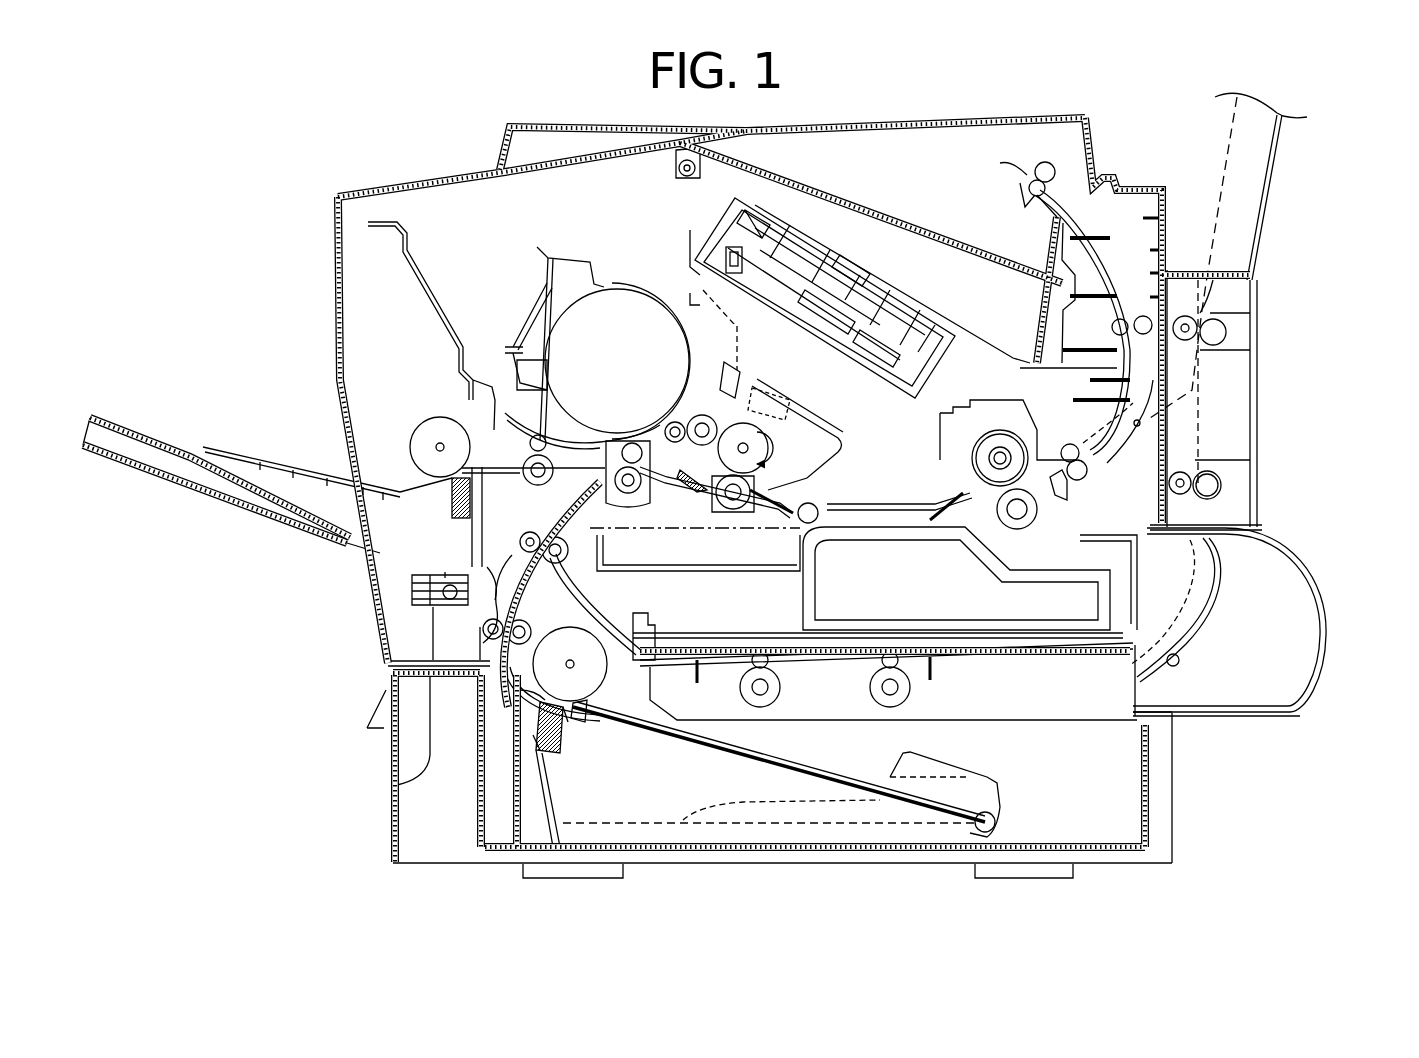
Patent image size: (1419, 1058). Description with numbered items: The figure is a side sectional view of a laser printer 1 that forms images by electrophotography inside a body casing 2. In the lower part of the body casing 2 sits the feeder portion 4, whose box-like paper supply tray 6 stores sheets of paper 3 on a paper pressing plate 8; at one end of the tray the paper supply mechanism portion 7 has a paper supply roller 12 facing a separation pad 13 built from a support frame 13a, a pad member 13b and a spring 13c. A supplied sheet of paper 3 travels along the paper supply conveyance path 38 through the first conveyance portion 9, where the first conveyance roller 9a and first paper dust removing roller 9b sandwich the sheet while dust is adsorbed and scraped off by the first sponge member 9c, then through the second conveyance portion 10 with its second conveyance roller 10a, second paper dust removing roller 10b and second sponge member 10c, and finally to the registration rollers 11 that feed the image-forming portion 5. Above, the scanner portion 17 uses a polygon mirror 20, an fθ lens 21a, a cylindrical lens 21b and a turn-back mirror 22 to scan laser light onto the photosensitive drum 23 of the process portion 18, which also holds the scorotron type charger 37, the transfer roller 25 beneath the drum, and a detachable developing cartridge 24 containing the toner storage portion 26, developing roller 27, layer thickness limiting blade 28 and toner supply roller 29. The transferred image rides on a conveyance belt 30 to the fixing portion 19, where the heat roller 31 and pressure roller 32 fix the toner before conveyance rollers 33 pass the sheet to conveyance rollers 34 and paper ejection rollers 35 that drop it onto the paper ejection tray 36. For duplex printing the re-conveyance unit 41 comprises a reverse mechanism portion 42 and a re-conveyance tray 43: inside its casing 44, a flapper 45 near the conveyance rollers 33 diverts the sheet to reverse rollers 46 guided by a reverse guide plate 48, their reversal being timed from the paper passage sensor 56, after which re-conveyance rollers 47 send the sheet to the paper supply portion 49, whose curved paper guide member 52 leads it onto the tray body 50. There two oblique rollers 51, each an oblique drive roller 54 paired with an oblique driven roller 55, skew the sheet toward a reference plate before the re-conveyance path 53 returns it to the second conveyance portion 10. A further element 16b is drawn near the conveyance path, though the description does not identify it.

The laser printer 1 is at (814, 906).
The body casing 2 is at (338, 346).
The sheet of paper 3 is at (1000, 165).
The feeder portion 4 is at (1157, 772).
The image-forming portion 5 is at (553, 241).
The paper supply tray 6 is at (1152, 831).
The paper supply mechanism portion 7 is at (618, 676).
The paper pressing plate 8 is at (693, 740).
The first conveyance portion 9 is at (543, 628).
The first conveyance roller 9a is at (545, 614).
The first paper dust removing roller 9b is at (500, 619).
The first sponge member 9c is at (489, 627).
The second conveyance portion 10 is at (475, 533).
The second conveyance roller 10a is at (577, 566).
The second paper dust removing roller 10b is at (512, 550).
The second sponge member 10c is at (527, 567).
The registration rollers 11 is at (607, 440).
The paper supply roller 12 is at (588, 710).
The separation pad 13 is at (570, 760).
The support frame 13a is at (547, 700).
The pad member 13b is at (575, 740).
The spring 13c is at (533, 737).
The conveying roller 16b is at (550, 430).
The scanner portion 17 is at (712, 215).
The process portion 18 is at (534, 288).
The fixing portion 19 is at (960, 482).
The polygon mirror 20 is at (908, 300).
The fθ lens 21a is at (852, 263).
The cylindrical lens 21b is at (715, 256).
The turn-back mirror 22 is at (765, 223).
The photosensitive drum 23 is at (782, 470).
The developing cartridge 24 is at (735, 322).
The transfer roller 25 is at (710, 510).
The toner storage portion 26 is at (638, 305).
The developing roller 27 is at (770, 410).
The layer thickness limiting blade 28 is at (744, 395).
The toner supply roller 29 is at (668, 421).
The conveyance belt 30 is at (790, 500).
The heat roller 31 is at (1020, 412).
The pressure roller 32 is at (1020, 530).
The conveyance rollers 33 is at (1095, 470).
The conveyance rollers 34 is at (1112, 326).
The paper ejection rollers 35 is at (1065, 322).
The paper ejection tray 36 is at (922, 223).
The scorotron type charger 37 is at (812, 418).
The paper supply conveyance path 38 is at (569, 547).
The re-conveyance unit 41 is at (1255, 397).
The reverse mechanism portion 42 is at (1275, 362).
The re-conveyance tray 43 is at (1264, 622).
The casing 44 is at (1262, 393).
The flapper 45 is at (1113, 450).
The reverse rollers 46 is at (1250, 313).
The re-conveyance rollers 47 is at (1223, 490).
The reverse guide plate 48 is at (1277, 177).
The paper supply portion 49 is at (1310, 584).
The tray body 50 is at (1038, 665).
The oblique rollers 51 is at (882, 710).
The paper guide member 52 is at (1215, 612).
The re-conveyance path 53 is at (600, 615).
The oblique drive roller 54 is at (910, 688).
The oblique driven roller 55 is at (890, 652).
The paper passage sensor 56 is at (1053, 493).